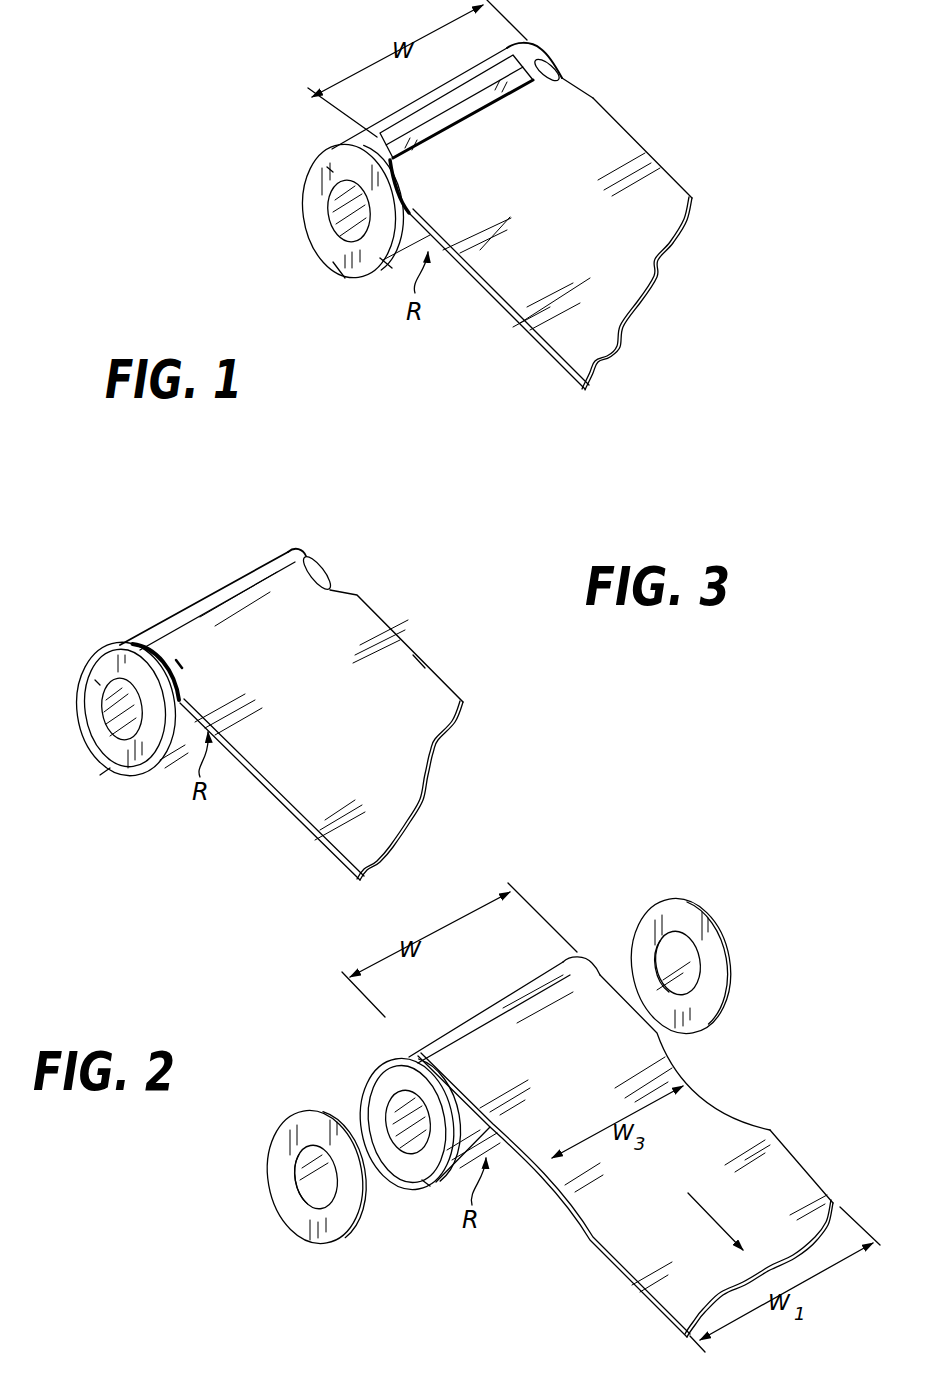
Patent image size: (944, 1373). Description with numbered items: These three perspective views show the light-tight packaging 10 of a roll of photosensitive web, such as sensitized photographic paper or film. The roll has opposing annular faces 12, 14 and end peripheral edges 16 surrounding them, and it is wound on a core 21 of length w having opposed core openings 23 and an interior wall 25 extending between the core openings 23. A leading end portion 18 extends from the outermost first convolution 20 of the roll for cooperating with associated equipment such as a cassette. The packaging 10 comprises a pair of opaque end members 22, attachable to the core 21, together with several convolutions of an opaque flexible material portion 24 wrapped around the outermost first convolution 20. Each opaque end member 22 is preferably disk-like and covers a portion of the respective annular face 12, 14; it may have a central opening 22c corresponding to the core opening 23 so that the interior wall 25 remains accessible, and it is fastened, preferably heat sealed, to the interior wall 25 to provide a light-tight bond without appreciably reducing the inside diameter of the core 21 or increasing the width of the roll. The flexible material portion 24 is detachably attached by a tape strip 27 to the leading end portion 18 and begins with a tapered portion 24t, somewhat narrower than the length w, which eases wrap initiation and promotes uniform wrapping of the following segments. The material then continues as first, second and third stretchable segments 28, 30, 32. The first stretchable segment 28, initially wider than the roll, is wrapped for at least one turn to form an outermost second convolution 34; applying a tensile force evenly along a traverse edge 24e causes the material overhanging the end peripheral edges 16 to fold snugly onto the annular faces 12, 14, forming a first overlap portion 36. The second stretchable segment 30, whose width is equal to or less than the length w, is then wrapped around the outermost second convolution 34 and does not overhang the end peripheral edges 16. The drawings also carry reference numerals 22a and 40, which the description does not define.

In FIG. 1, the light-tight packaging 10 is at (680, 82).
In FIG. 3, the light-tight packaging 10 is at (413, 550).
In FIG. 2, the light-tight packaging 10 is at (540, 898).
In FIG. 1, the annular face 12 is at (327, 167).
In FIG. 3, the annular face 12 is at (95, 680).
In FIG. 1, the annular face 14 is at (560, 67).
In FIG. 2, the annular face 14 is at (593, 963).
In FIG. 1, the end peripheral edges 16 is at (340, 150).
In FIG. 2, the end peripheral edges 16 is at (422, 1055).
In FIG. 1, the leading end portion 18 is at (450, 83).
In FIG. 1, the outermost first convolution 20 is at (373, 133).
In FIG. 1, the core 21 is at (333, 262).
In FIG. 2, the core 21 is at (422, 1180).
In FIG. 1, the opaque end member 22 is at (320, 243).
In FIG. 3, the opaque end member 22 is at (125, 755).
In FIG. 2, the opaque end member 22 is at (275, 1163).
In FIG. 3, the washer bore 22a is at (103, 777).
In FIG. 2, the washer bore 22a is at (320, 1173).
In FIG. 1, the central opening 22c is at (388, 262).
In FIG. 1, the core opening 23 is at (333, 221).
In FIG. 3, the core opening 23 is at (118, 742).
In FIG. 2, the core opening 23 is at (392, 1115).
In FIG. 1, the flexible material portion 24 is at (690, 192).
In FIG. 3, the flexible material portion 24 is at (447, 686).
In FIG. 2, the flexible material portion 24 is at (763, 1120).
In FIG. 2, the traverse edge 24e is at (850, 1195).
In FIG. 1, the tapered portion 24t is at (403, 153).
In FIG. 1, the interior wall 25 is at (330, 200).
In FIG. 3, the interior wall 25 is at (110, 717).
In FIG. 2, the interior wall 25 is at (380, 1098).
In FIG. 1, the tape strip 27 is at (562, 72).
In FIG. 1, the first stretchable segment 28 is at (667, 173).
In FIG. 3, the first stretchable segment 28 is at (352, 622).
In FIG. 2, the first stretchable segment 28 is at (510, 1017).
In FIG. 3, the second stretchable segment 30 is at (175, 657).
In FIG. 2, the second stretchable segment 30 is at (697, 1103).
In FIG. 3, the third stretchable segment 32 is at (413, 663).
In FIG. 2, the third stretchable segment 32 is at (615, 1250).
In FIG. 3, the outermost second convolution 34 is at (133, 628).
In FIG. 2, the outermost second convolution 34 is at (390, 1070).
In FIG. 3, the first overlap portion 36 is at (77, 707).
In FIG. 2, the first overlap portion 36 is at (440, 1078).
In FIG. 3, the flange bend 40 is at (143, 645).